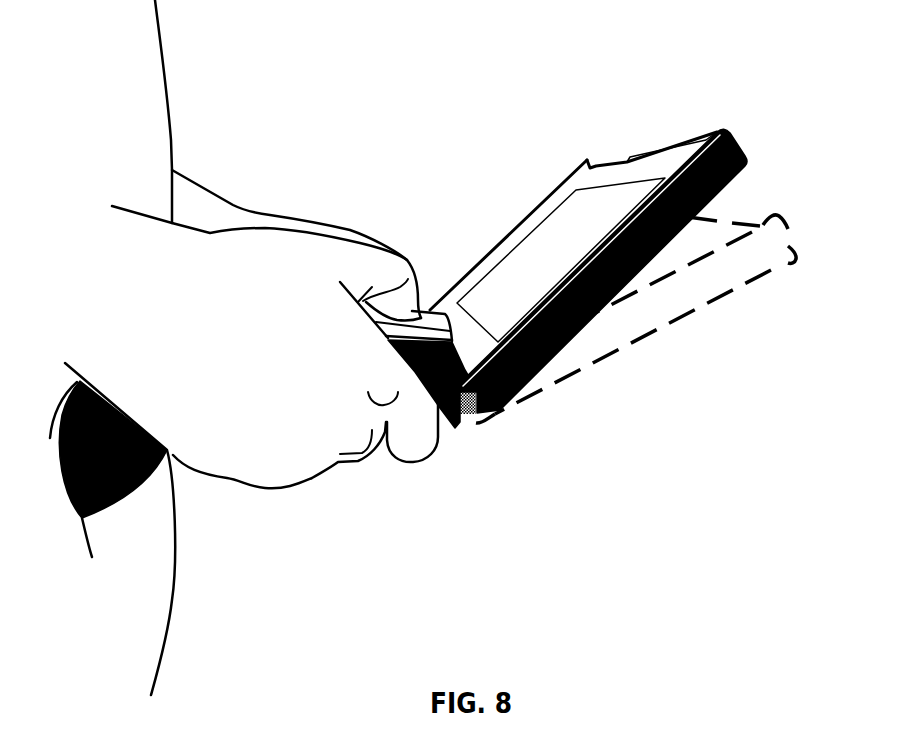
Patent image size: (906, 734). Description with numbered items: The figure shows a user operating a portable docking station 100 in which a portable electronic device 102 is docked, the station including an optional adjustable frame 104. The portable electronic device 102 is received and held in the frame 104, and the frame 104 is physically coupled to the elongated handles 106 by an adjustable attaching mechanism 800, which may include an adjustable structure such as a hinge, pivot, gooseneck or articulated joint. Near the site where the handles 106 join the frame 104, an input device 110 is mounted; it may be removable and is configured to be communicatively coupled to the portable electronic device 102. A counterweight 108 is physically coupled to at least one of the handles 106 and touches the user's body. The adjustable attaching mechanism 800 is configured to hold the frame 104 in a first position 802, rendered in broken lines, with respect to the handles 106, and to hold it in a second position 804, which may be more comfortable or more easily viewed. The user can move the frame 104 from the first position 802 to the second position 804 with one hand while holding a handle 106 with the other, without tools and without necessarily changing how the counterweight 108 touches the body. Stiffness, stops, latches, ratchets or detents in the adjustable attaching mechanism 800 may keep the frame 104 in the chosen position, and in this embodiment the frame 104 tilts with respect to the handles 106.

The portable docking station 100 is at (577, 428).
The portable electronic device 102 is at (630, 170).
The frame 104 is at (735, 132).
The handle 106 is at (409, 418).
The counterweight 108 is at (106, 530).
The input device 110 is at (427, 296).
The adjustable attaching mechanism 800 is at (464, 412).
The first position 802 is at (657, 353).
The second position 804 is at (674, 258).